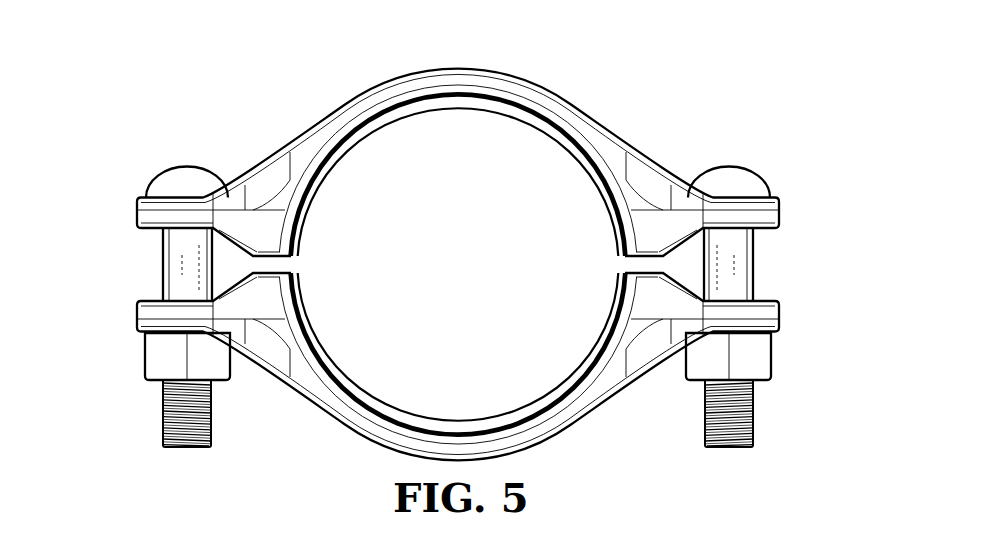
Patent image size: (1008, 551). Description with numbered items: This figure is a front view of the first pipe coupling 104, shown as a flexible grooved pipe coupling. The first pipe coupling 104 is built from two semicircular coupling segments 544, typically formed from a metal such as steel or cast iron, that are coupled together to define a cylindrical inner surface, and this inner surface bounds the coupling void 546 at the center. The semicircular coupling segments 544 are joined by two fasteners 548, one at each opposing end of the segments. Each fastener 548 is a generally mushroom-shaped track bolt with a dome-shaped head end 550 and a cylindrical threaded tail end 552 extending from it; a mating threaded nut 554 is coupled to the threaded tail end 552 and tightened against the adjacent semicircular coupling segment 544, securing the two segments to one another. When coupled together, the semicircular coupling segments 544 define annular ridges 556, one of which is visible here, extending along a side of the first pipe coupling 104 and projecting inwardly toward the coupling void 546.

The first pipe coupling 104 is at (670, 117).
The semicircular coupling segments 544 is at (556, 93).
The coupling void 546 is at (374, 185).
The fasteners 548 is at (128, 271).
The dome-shaped head end 550 is at (164, 180).
The cylindrical threaded tail end 552 is at (163, 420).
The threaded nut 554 is at (163, 354).
The annular ridges 556 is at (543, 127).